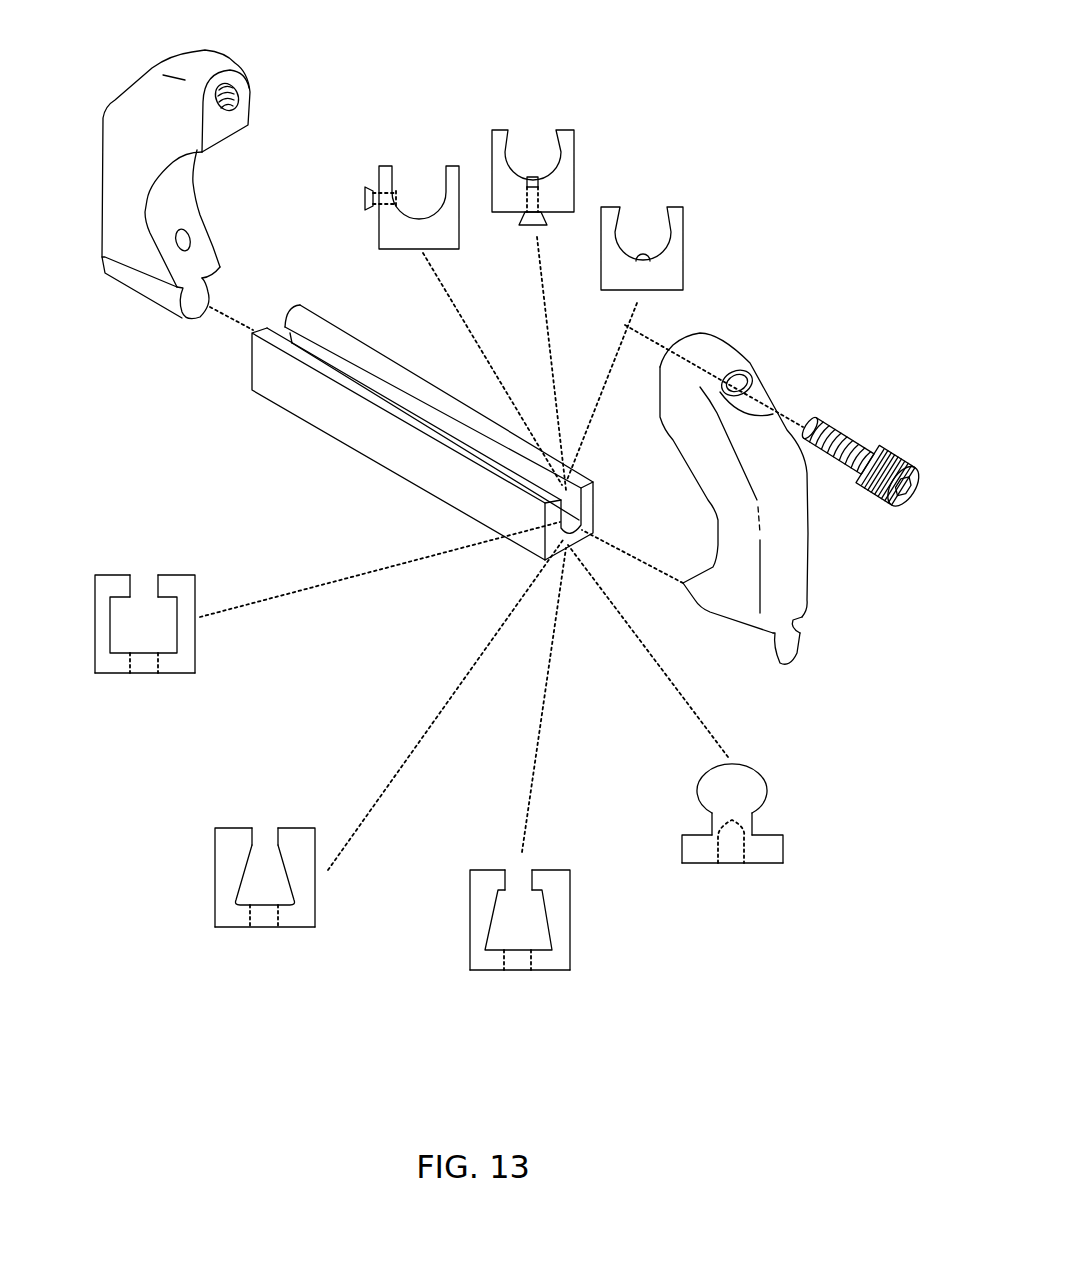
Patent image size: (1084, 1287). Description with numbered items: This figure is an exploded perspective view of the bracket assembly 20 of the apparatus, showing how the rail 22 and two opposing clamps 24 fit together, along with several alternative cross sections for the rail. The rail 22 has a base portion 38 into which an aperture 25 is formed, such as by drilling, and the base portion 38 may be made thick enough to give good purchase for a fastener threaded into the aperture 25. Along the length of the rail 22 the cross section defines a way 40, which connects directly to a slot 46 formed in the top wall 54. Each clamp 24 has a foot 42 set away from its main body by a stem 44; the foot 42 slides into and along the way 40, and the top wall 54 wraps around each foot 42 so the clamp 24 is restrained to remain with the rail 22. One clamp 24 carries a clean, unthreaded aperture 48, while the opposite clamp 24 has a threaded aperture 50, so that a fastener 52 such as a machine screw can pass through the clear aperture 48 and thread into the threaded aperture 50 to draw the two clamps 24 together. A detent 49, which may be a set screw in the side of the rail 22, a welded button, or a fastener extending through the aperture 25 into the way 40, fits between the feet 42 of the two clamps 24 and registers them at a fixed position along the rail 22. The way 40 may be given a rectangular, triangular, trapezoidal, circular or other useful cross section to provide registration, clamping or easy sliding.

The clamp assembly 20 is at (722, 72).
The rail 22 is at (385, 458).
The clamp 24 is at (120, 163).
The aperture 25 is at (143, 665).
The base portion 38 is at (178, 665).
The way 40 is at (130, 641).
The foot 42 is at (200, 318).
The stem 44 is at (210, 280).
The slot 46 is at (192, 213).
The aperture 48 is at (745, 378).
The detent 49 is at (368, 196).
The threaded aperture 50 is at (238, 96).
The fastener 52 is at (830, 432).
The top wall 54 is at (402, 388).